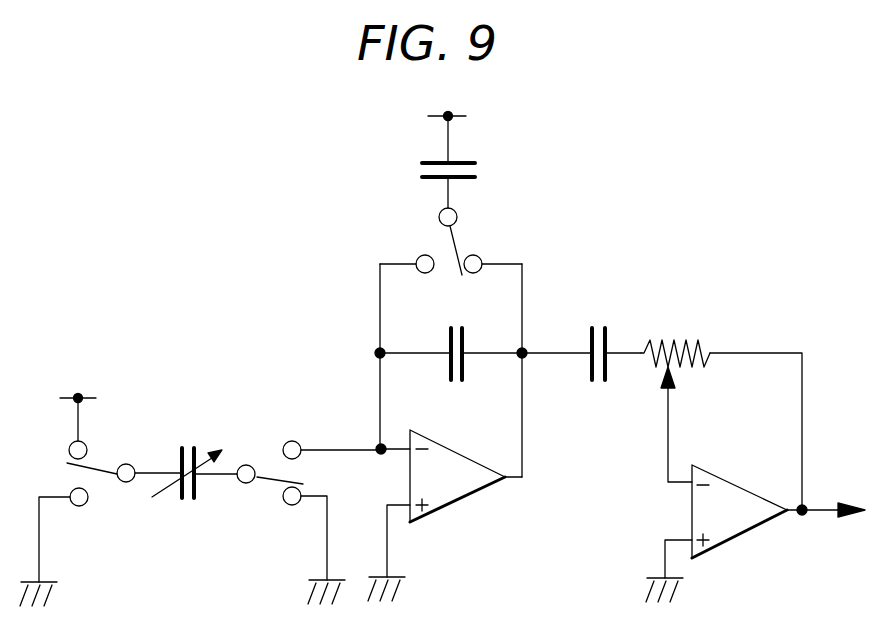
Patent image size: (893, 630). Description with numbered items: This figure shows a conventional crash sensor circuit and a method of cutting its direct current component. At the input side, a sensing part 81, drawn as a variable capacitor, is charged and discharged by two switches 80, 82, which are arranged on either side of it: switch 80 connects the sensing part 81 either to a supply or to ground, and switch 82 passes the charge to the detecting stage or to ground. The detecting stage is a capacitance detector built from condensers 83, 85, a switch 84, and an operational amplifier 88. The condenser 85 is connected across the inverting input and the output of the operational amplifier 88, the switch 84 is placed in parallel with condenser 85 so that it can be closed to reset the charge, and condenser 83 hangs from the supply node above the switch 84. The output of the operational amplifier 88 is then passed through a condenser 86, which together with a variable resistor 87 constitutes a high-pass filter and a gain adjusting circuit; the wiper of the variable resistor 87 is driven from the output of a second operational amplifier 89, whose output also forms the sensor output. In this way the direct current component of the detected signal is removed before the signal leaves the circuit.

The switch 80 is at (93, 467).
The sensing part 81 is at (189, 467).
The switch 82 is at (263, 474).
The condenser 83 is at (458, 168).
The switch 84 is at (457, 245).
The condenser 85 is at (460, 342).
The condenser 86 is at (610, 340).
The variable resistor 87 is at (673, 342).
The operational amplifier 88 is at (447, 482).
The operational amplifier 89 is at (722, 515).